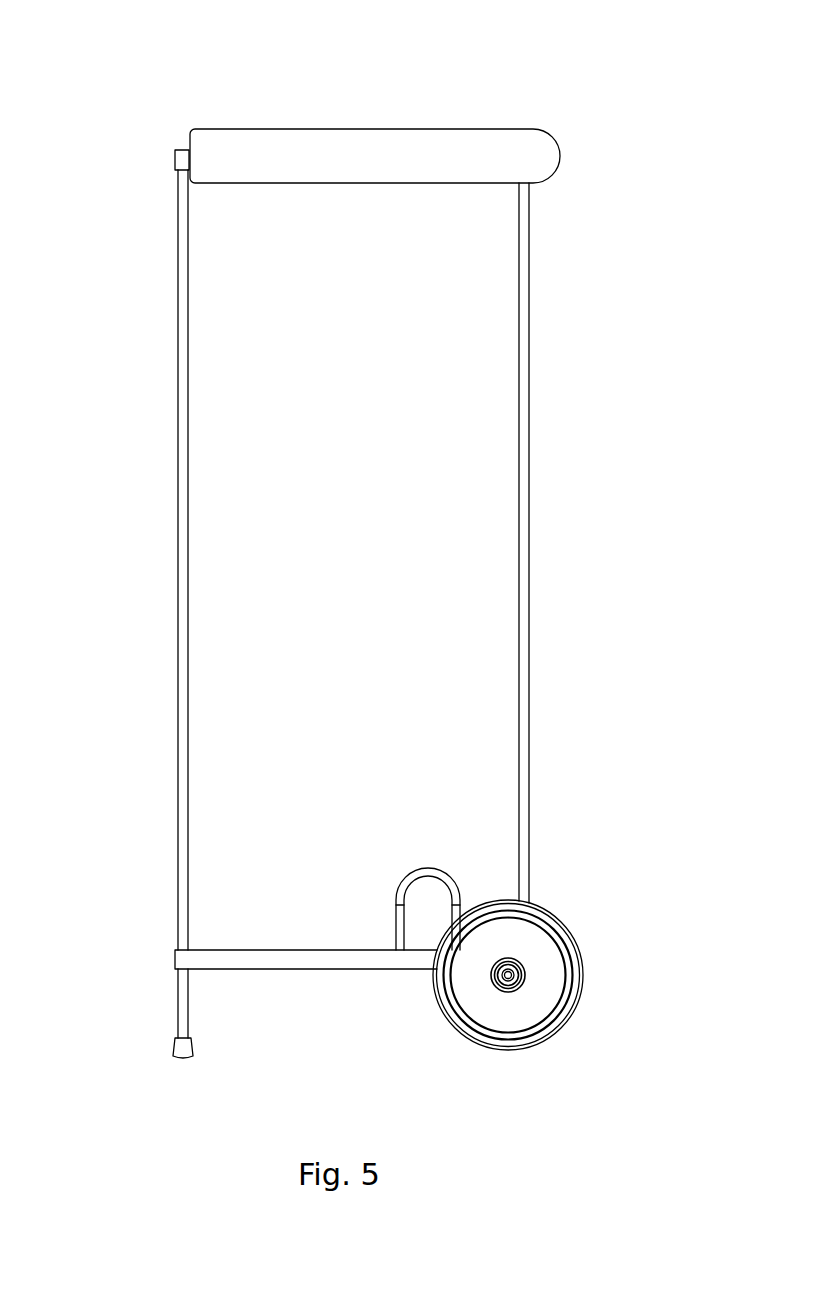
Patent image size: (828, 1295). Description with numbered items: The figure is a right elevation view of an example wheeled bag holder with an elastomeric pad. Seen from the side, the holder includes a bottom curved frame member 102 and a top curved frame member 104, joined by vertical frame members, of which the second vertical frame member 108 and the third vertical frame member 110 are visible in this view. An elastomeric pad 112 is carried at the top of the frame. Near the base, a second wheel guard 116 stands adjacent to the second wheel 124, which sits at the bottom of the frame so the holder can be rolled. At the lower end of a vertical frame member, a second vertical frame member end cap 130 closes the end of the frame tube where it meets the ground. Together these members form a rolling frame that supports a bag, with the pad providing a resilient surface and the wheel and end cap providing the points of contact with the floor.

The bottom curved frame member 102 is at (300, 963).
The top curved frame member 104 is at (185, 160).
The second vertical frame member 108 is at (522, 573).
The third vertical frame member 110 is at (182, 562).
The elastomeric pad 112 is at (438, 160).
The second wheel guard 116 is at (415, 875).
The second wheel 124 is at (570, 942).
The second vertical frame member end cap 130 is at (175, 1055).